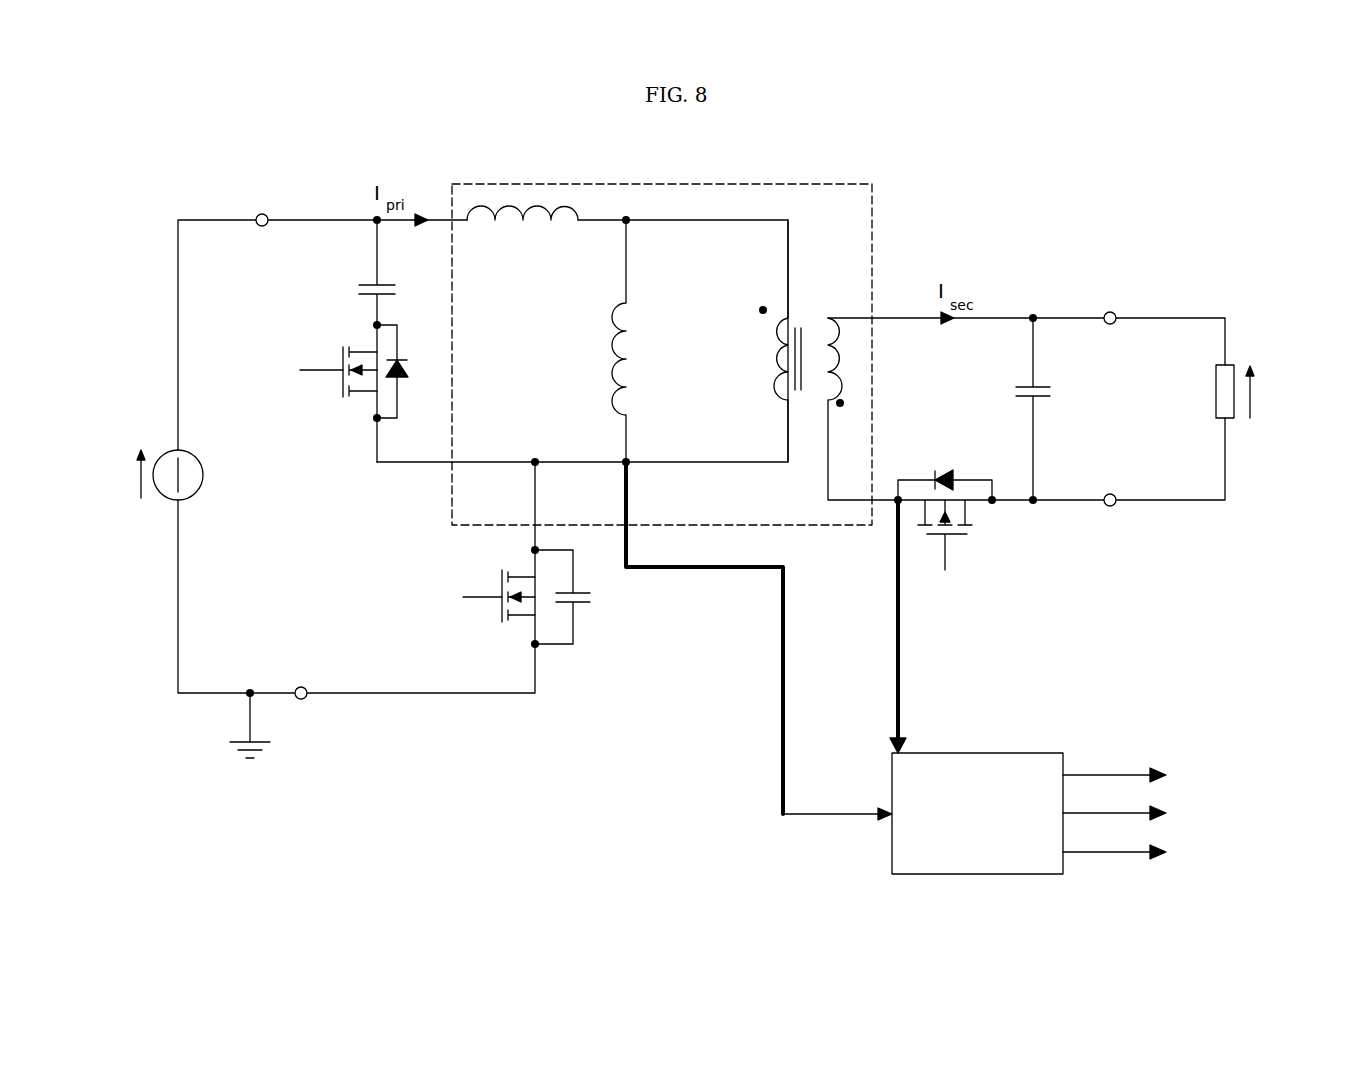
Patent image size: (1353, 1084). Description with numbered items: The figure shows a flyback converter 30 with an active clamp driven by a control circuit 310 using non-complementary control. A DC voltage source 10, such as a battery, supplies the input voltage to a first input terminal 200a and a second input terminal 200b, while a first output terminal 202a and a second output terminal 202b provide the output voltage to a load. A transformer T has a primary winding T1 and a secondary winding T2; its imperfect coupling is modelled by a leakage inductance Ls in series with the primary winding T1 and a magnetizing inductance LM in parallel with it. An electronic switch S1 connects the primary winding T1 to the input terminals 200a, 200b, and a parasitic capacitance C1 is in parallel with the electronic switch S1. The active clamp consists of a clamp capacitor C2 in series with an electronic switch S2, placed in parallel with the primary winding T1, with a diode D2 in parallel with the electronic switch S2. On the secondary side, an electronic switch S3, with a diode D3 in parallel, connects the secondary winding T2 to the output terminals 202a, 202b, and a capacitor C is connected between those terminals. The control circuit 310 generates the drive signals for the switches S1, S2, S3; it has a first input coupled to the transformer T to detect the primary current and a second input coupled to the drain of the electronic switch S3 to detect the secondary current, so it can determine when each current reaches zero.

The DC voltage source 10 is at (160, 450).
The flyback converter 30 is at (1215, 368).
The first input terminal 200a is at (263, 213).
The second input terminal 200b is at (305, 700).
The first output terminal 202a is at (1110, 311).
The second output terminal 202b is at (1112, 508).
The control circuit 310 is at (990, 866).
The transformer T is at (873, 200).
The primary winding T1 is at (773, 365).
The secondary winding T2 is at (822, 406).
The leakage inductance Ls is at (537, 200).
The magnetizing inductance LM is at (603, 303).
The parasitic capacitance C1 is at (582, 605).
The clamp capacitor C2 is at (368, 284).
The capacitor C is at (1042, 395).
The electronic switch S1 is at (500, 576).
The electronic switch S2 is at (340, 358).
The electronic switch S3 is at (955, 536).
The diode D2 is at (410, 368).
The diode D3 is at (937, 468).